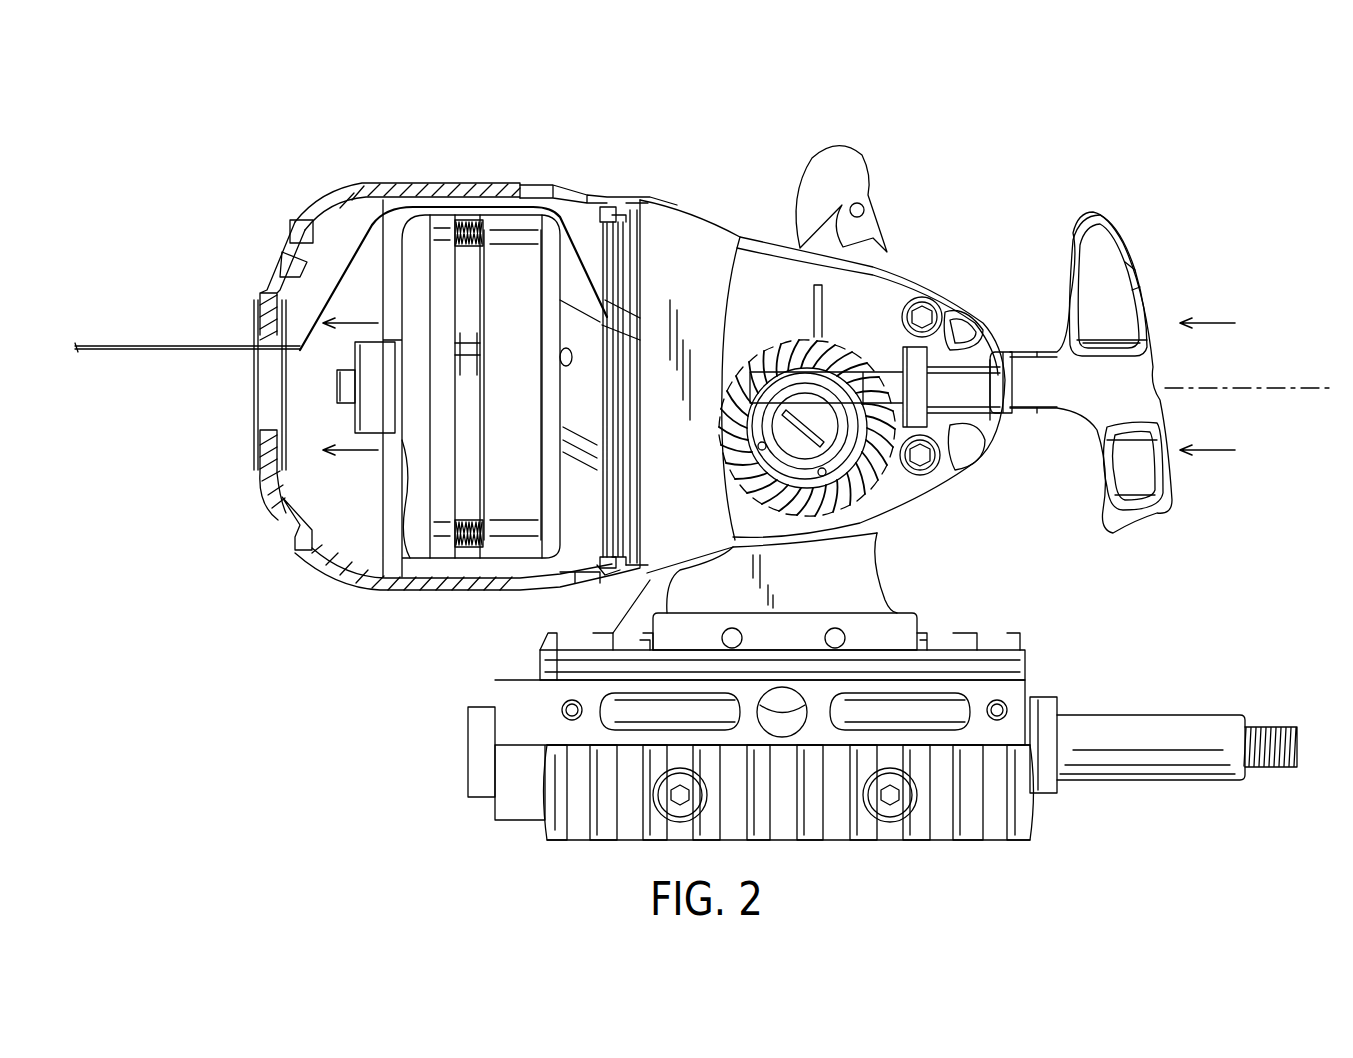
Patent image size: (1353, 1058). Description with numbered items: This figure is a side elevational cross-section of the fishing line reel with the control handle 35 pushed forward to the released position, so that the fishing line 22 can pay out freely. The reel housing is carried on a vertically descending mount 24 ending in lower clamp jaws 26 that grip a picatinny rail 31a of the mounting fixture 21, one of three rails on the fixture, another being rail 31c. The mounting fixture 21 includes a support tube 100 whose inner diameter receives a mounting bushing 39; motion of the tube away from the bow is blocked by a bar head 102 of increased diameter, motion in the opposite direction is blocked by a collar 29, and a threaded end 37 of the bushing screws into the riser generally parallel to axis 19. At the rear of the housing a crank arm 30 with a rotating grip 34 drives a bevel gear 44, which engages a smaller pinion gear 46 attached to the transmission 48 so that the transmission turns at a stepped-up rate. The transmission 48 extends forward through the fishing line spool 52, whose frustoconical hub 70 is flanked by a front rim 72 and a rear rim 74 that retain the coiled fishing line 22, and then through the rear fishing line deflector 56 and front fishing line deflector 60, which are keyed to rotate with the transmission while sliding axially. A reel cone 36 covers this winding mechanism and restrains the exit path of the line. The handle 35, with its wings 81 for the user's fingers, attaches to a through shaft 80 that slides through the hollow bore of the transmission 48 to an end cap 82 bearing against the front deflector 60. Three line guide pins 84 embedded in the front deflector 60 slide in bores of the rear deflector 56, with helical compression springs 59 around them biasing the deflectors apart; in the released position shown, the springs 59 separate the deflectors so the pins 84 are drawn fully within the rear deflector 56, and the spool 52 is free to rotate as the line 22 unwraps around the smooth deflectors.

The axis 19 is at (1250, 388).
The mounting fixture 21 is at (852, 749).
The fishing line 22 is at (160, 345).
The vertically descending mount 24 is at (850, 585).
The clamp jaws 26 is at (900, 625).
The collar 29 is at (1045, 795).
The crank arm 30 is at (830, 240).
The picatinny rail 31a is at (590, 667).
The picatinny rail 31c is at (558, 820).
The rotating grip 34 is at (830, 160).
The handle 35 is at (1120, 388).
The reel cone 36 is at (352, 192).
The threaded end 37 is at (1295, 760).
The mounting bushing 39 is at (1190, 780).
The bevel gear 44 is at (790, 355).
The pinion gear 46 is at (740, 375).
The transmission 48 is at (470, 365).
The fishing line spool 52 is at (620, 258).
The rear fishing line deflector 56 is at (512, 385).
The helical compression springs 59 is at (462, 232).
The front fishing line deflector 60 is at (403, 505).
The hub 70 is at (595, 495).
The front rim 72 is at (602, 228).
The rear rim 74 is at (625, 255).
The through shaft 80 is at (338, 384).
The wings 81 is at (1110, 250).
The end cap 82 is at (358, 413).
The line guide pins 84 is at (470, 244).
The support tube 100 is at (520, 805).
The bar head 102 is at (468, 757).